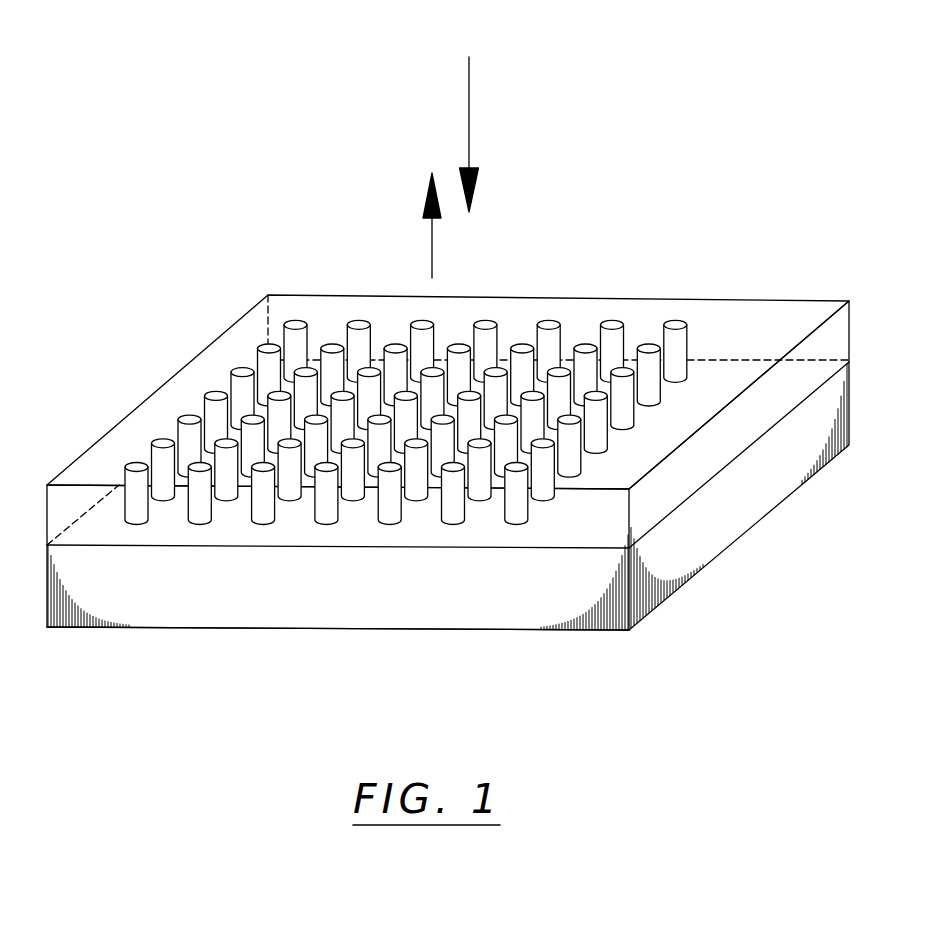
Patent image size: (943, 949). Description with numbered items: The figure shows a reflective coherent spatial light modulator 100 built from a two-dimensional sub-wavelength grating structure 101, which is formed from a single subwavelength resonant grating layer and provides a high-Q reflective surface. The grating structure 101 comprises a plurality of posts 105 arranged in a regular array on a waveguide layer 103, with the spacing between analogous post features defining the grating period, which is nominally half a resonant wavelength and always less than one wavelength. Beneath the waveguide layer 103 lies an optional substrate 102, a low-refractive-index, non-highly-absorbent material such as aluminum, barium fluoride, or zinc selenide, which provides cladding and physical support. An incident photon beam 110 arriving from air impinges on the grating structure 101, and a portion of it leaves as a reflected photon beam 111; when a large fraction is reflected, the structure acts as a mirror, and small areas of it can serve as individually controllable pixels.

The reflective coherent spatial light modulator (RCSLM) 100 is at (335, 698).
The sub-wavelength grating structure (SWS) 101 is at (98, 417).
The substrate 102 is at (552, 602).
The waveguide layer 103 is at (695, 398).
The posts 105 is at (497, 327).
The incident photon beam 110 is at (473, 114).
The reflected photon beam 111 is at (416, 227).